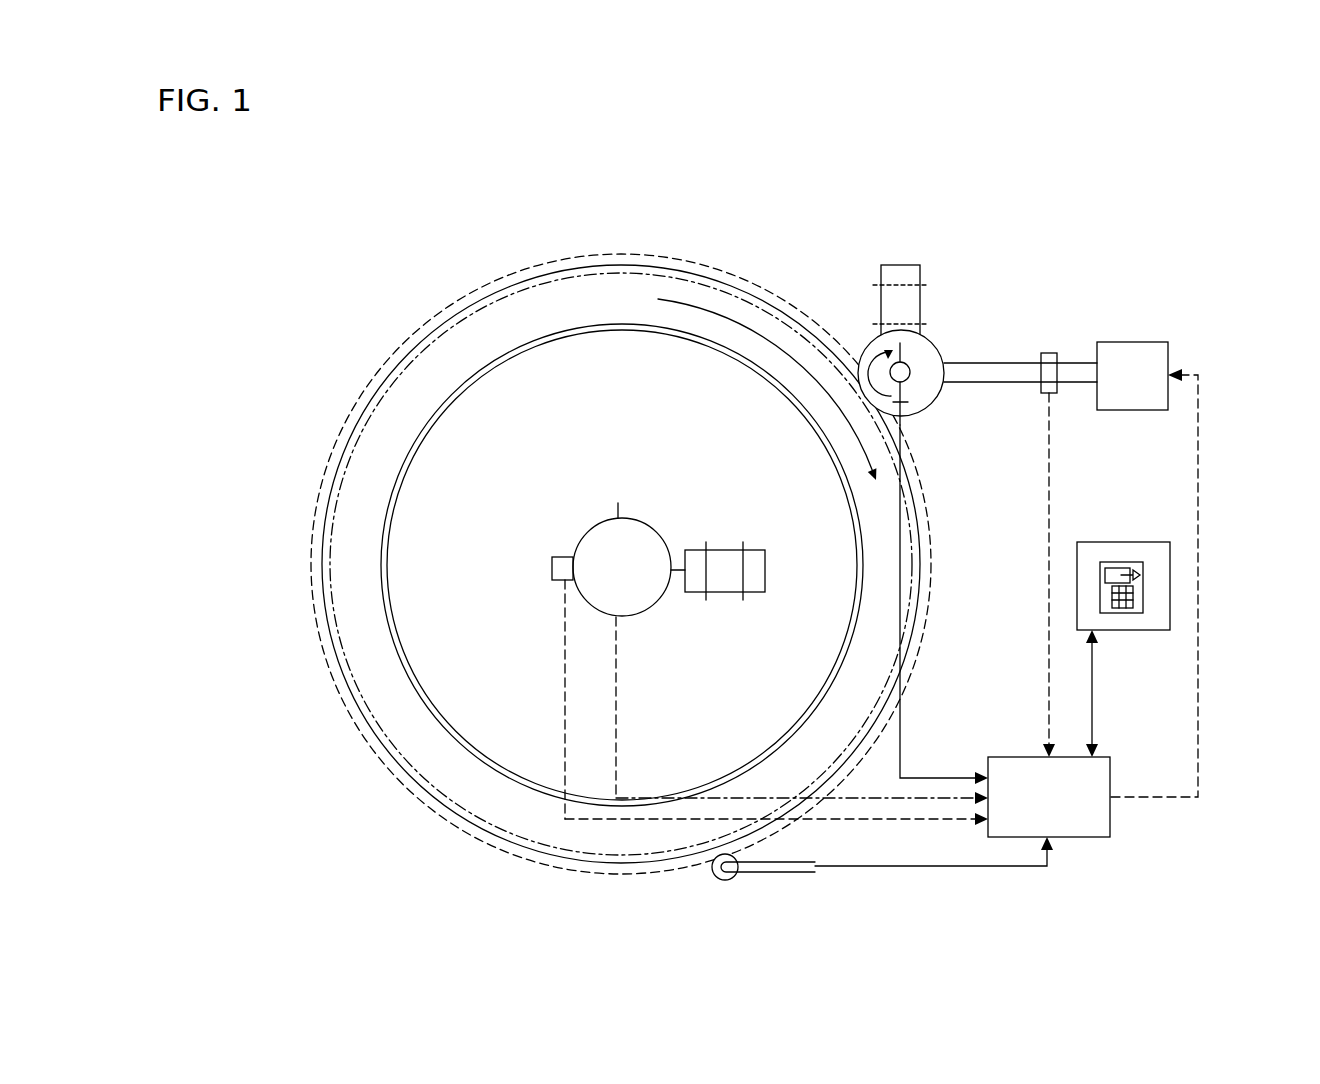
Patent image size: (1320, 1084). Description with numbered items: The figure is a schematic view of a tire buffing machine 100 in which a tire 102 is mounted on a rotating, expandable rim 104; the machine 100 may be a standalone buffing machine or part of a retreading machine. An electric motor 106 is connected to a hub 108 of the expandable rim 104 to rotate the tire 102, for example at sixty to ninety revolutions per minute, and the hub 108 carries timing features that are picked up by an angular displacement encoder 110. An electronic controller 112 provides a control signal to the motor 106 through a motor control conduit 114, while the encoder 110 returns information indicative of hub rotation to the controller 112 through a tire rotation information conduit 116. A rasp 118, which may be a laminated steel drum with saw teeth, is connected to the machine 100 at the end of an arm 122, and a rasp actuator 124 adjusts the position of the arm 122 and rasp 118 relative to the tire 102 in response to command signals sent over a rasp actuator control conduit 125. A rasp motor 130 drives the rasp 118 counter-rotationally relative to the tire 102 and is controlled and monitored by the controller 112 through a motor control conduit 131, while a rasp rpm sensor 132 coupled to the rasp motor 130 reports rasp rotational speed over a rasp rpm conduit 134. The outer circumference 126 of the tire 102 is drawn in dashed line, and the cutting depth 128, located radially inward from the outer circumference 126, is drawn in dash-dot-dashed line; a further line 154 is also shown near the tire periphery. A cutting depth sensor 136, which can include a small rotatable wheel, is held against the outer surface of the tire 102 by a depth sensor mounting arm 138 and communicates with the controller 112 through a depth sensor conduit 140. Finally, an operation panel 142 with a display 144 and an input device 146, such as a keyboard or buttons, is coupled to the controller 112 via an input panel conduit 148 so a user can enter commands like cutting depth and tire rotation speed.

The buffing machine 100 is at (856, 228).
The tire 102 is at (574, 309).
The expandable rim 104 is at (433, 502).
The electric motor 106 is at (720, 593).
The hub 108 is at (620, 517).
The angular displacement encoder 110 is at (563, 556).
The electronic controller 112 is at (1110, 820).
The motor control conduit 114 is at (616, 708).
The tire rotation information conduit 116 is at (565, 684).
The rasp 118 is at (940, 345).
The arm 122 is at (1070, 384).
The rasp actuator 124 is at (1130, 342).
The rasp actuator control conduit 125 is at (1198, 485).
The outer circumference 126 is at (306, 562).
The cutting depth 128 is at (353, 722).
The rasp motor 130 is at (880, 302).
The motor control conduit 131 is at (900, 750).
The rasp rpm sensor 132 is at (1050, 352).
The rasp rpm conduit 134 is at (1048, 612).
The cutting depth sensor 136 is at (722, 881).
The depth sensor mounting arm 138 is at (790, 873).
The depth sensor conduit 140 is at (965, 868).
The operation panel 142 is at (1105, 542).
The display 144 is at (1132, 563).
The input device 146 is at (1116, 613).
The input panel conduit 148 is at (1095, 706).
The ring surface 154 is at (321, 637).